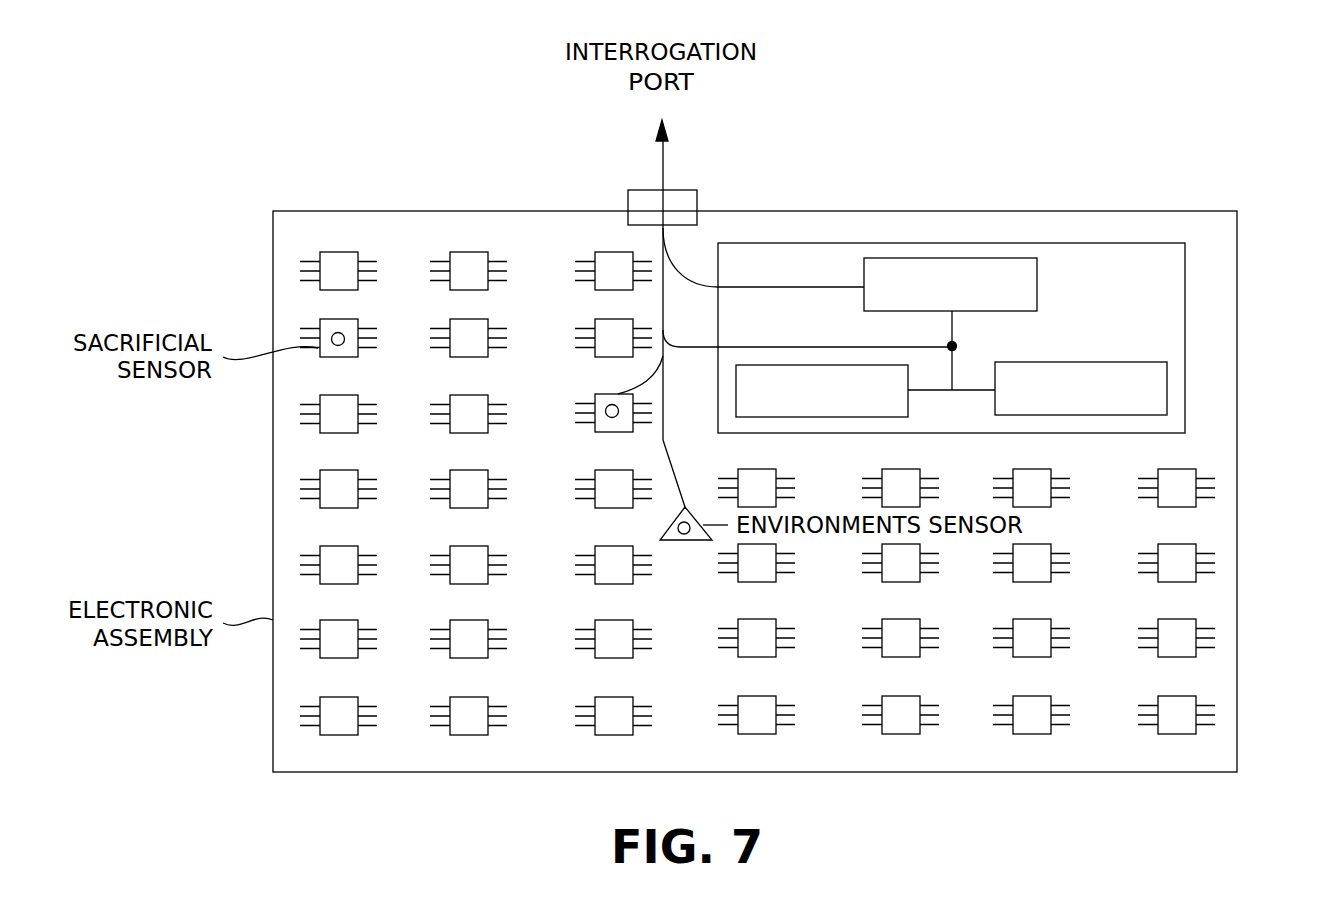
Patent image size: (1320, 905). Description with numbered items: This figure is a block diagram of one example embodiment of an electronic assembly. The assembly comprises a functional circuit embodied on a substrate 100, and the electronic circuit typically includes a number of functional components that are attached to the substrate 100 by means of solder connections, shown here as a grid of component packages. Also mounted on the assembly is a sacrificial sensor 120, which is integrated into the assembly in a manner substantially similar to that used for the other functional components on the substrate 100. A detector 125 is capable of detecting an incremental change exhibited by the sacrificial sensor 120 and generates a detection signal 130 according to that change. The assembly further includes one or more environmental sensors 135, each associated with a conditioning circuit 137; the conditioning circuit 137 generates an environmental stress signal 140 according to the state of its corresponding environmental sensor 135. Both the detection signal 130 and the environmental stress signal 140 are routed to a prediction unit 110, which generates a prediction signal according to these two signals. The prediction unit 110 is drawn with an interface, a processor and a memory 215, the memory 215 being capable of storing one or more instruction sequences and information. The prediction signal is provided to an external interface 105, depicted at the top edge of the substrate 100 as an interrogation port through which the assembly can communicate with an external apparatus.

The substrate 100 is at (337, 211).
The external interface 105 is at (694, 190).
The prediction unit 110 is at (1038, 283).
The memory 215 is at (1167, 390).
The sacrificial sensor 120 is at (594, 395).
The detector 125 is at (607, 416).
The detection signal 130 is at (620, 378).
The environmental sensor 135 is at (685, 542).
The conditioning circuit 137 is at (670, 522).
The environmental stress signal 140 is at (672, 453).